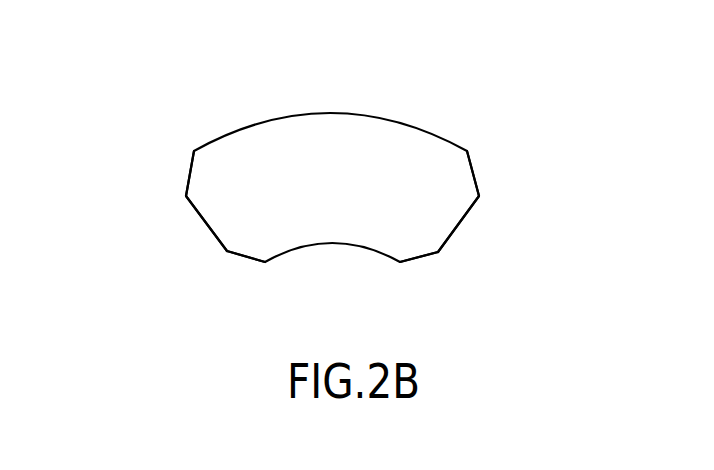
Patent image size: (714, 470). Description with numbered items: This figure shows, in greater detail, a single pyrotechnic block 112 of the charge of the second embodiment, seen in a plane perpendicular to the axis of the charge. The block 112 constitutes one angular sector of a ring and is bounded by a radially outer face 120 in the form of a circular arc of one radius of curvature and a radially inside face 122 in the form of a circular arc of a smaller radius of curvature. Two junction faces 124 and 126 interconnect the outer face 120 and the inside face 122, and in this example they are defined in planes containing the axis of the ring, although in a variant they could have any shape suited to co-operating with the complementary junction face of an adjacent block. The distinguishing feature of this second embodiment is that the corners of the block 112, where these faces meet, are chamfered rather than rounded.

The pyrotechnic block 112 is at (423, 118).
The radially outer face 120 is at (333, 115).
The radially inside face 122 is at (333, 247).
The junction face 124 is at (203, 223).
The junction face 126 is at (463, 223).